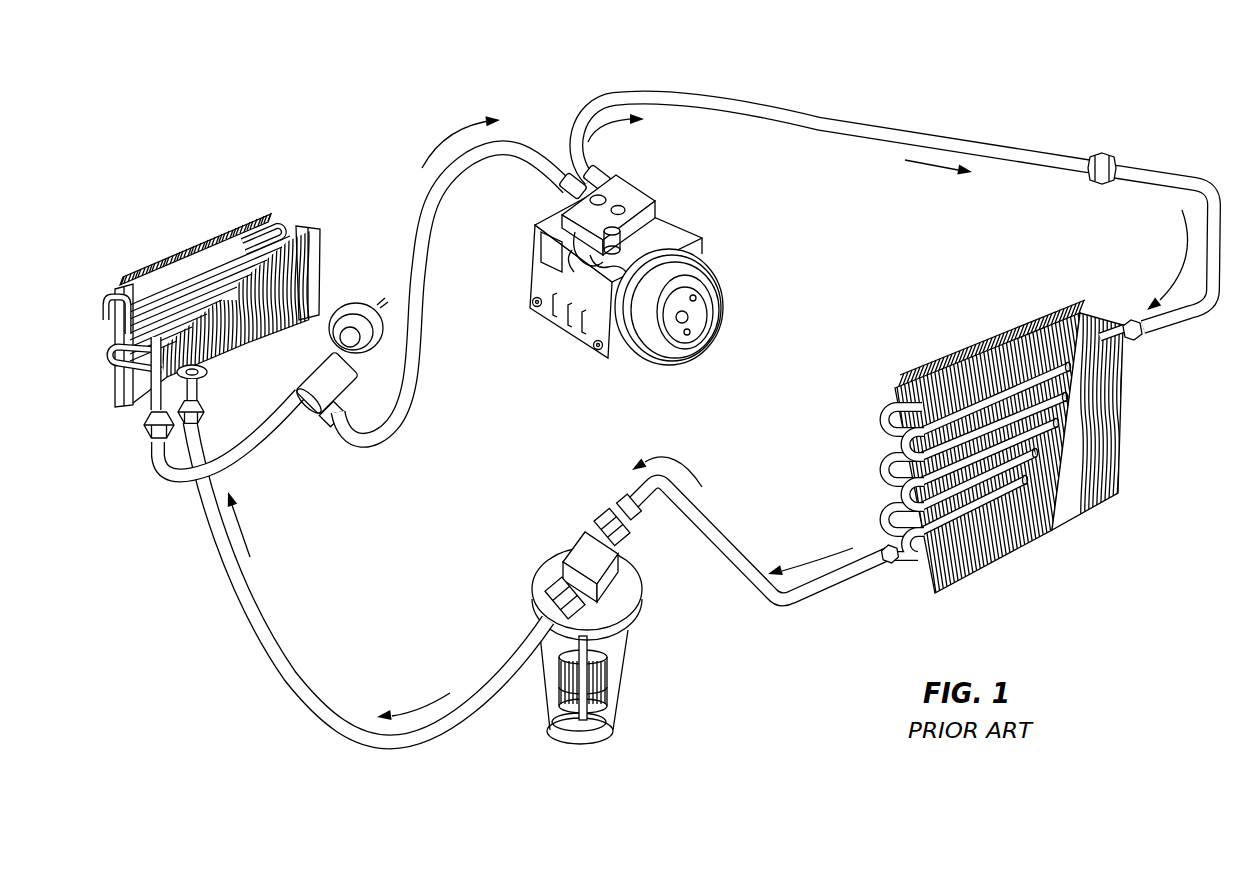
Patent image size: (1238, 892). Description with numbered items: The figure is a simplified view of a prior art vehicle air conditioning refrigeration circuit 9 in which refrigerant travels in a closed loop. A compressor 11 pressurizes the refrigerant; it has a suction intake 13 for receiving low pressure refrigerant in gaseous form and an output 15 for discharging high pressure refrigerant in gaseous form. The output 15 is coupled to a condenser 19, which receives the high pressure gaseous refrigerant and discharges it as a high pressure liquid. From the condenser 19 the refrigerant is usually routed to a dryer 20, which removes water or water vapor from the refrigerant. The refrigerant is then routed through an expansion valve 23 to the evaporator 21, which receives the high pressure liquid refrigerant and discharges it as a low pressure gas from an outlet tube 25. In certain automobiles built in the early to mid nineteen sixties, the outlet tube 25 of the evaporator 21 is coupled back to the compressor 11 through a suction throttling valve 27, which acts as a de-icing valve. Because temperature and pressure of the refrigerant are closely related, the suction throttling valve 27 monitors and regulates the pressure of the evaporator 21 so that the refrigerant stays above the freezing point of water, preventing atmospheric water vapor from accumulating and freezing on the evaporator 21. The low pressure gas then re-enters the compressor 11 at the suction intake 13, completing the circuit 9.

The vehicle air conditioning refrigeration circuit 9 is at (504, 99).
The compressor 11 is at (688, 224).
The suction intake 13 is at (560, 192).
The output 15 is at (598, 160).
The condenser 19 is at (952, 367).
The dryer 20 is at (537, 566).
The evaporator 21 is at (122, 279).
The expansion valve 23 is at (186, 428).
The outlet tube 25 is at (147, 408).
The suction throttling valve 27 is at (345, 377).